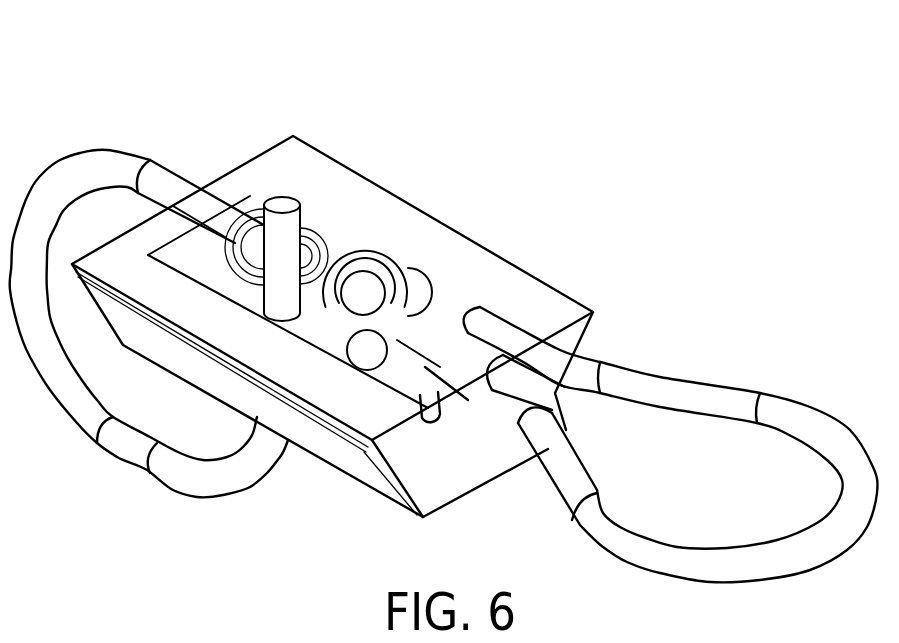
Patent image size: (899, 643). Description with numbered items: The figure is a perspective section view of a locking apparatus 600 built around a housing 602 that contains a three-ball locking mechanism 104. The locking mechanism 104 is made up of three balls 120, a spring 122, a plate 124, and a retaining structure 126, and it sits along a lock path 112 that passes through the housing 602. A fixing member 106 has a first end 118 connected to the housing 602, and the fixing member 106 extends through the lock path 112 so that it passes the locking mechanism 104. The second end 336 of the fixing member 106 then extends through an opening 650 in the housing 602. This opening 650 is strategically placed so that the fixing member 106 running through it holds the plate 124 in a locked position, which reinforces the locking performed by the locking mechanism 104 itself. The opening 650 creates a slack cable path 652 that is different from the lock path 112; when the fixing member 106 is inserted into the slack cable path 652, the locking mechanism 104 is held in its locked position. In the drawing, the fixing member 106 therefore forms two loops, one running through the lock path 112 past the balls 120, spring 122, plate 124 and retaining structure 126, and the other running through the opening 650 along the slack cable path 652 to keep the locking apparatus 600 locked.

The locking apparatus 600 is at (146, 80).
The housing 602 is at (490, 253).
The three-ball locking mechanism 104 is at (405, 222).
The fixing member 106 is at (710, 392).
The lock path 112 is at (615, 447).
The first end 118 is at (497, 330).
The balls 120 is at (413, 290).
The spring 122 is at (282, 207).
The plate 124 is at (380, 243).
The retaining structure 126 is at (357, 262).
The second end 336 is at (265, 188).
The opening 650 is at (264, 312).
The slack cable path 652 is at (283, 490).